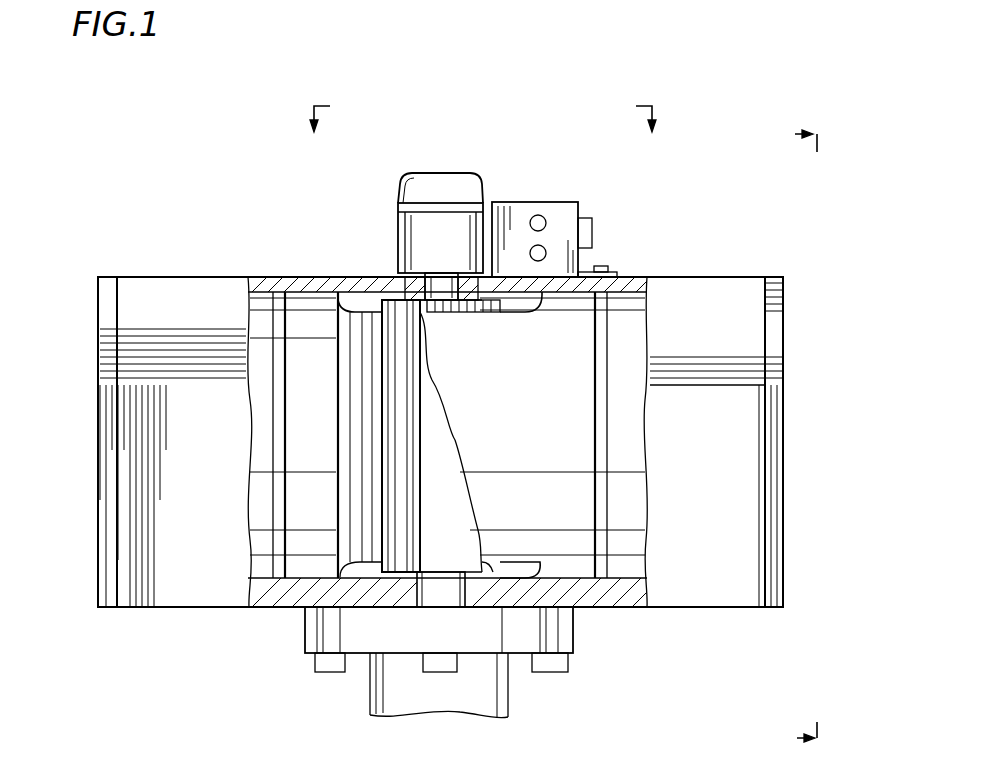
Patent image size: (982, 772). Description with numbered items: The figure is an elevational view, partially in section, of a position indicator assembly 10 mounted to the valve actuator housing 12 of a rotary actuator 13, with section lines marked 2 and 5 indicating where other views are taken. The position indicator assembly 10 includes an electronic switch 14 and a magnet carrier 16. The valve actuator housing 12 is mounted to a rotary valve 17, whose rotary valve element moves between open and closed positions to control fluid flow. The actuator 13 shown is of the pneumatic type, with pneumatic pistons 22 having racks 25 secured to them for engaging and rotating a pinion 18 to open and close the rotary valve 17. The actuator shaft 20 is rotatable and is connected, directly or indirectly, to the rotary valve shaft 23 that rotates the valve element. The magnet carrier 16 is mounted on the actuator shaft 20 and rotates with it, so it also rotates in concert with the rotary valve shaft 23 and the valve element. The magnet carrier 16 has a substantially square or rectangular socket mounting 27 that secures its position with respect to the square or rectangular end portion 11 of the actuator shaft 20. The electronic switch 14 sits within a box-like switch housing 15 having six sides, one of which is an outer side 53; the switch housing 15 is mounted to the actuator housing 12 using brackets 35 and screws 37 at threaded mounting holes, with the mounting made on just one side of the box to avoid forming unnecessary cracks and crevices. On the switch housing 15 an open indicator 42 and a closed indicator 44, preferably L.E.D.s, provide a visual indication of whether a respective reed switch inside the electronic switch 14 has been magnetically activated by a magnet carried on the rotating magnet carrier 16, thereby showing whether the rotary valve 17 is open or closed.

The position indicator assembly 10 is at (442, 112).
The end portion of actuator shaft 11 is at (453, 303).
The valve actuator housing 12 is at (745, 296).
The actuator 13 is at (167, 233).
The electronic switch 14 is at (563, 212).
The switch housing 15 is at (578, 201).
The magnet carrier 16 is at (398, 224).
The rotary valve 17 is at (572, 655).
The pinion 18 is at (425, 548).
The actuator shaft 20 is at (432, 288).
The pneumatic pistons 22 is at (258, 562).
The rotary valve shaft 23 is at (447, 590).
The racks 25 is at (358, 545).
The socket mounting 27 is at (477, 212).
The brackets 35 is at (617, 275).
The screws 37 is at (606, 270).
The open indicator 42 is at (538, 214).
The closed indicator 44 is at (540, 262).
The outer side of switch box 53 is at (582, 262).
The section line 2- 2 is at (480, 134).
The section line 5- 5 is at (796, 437).